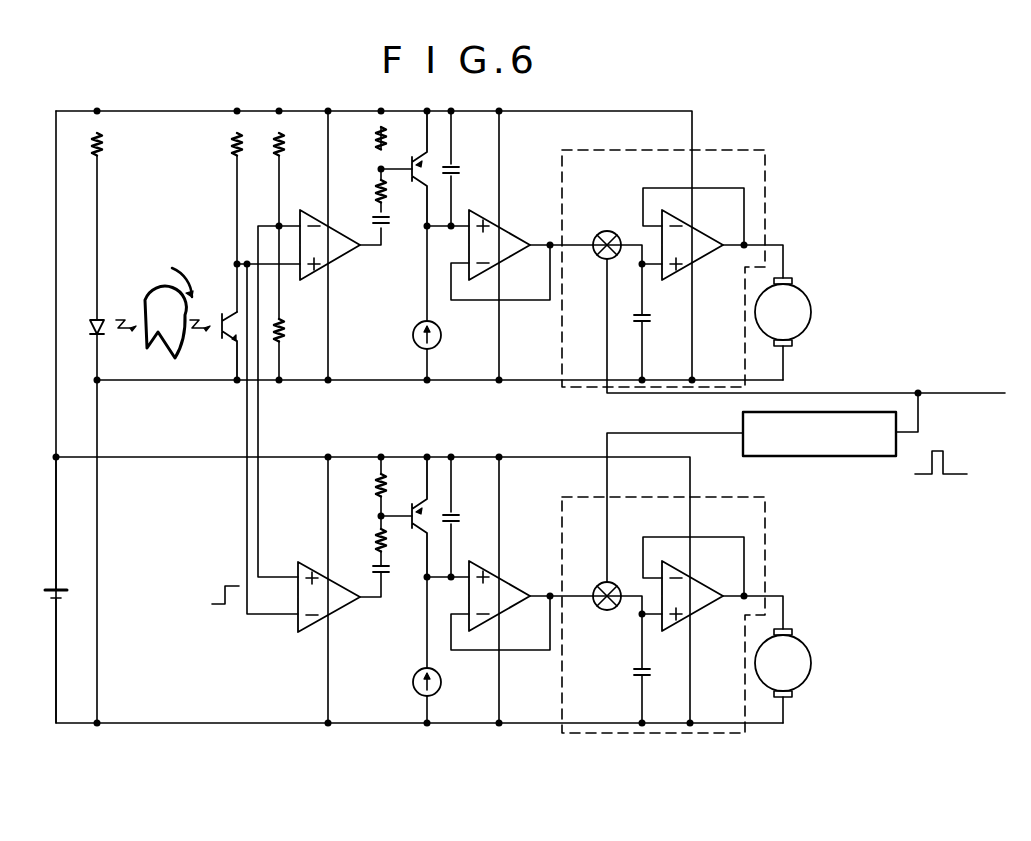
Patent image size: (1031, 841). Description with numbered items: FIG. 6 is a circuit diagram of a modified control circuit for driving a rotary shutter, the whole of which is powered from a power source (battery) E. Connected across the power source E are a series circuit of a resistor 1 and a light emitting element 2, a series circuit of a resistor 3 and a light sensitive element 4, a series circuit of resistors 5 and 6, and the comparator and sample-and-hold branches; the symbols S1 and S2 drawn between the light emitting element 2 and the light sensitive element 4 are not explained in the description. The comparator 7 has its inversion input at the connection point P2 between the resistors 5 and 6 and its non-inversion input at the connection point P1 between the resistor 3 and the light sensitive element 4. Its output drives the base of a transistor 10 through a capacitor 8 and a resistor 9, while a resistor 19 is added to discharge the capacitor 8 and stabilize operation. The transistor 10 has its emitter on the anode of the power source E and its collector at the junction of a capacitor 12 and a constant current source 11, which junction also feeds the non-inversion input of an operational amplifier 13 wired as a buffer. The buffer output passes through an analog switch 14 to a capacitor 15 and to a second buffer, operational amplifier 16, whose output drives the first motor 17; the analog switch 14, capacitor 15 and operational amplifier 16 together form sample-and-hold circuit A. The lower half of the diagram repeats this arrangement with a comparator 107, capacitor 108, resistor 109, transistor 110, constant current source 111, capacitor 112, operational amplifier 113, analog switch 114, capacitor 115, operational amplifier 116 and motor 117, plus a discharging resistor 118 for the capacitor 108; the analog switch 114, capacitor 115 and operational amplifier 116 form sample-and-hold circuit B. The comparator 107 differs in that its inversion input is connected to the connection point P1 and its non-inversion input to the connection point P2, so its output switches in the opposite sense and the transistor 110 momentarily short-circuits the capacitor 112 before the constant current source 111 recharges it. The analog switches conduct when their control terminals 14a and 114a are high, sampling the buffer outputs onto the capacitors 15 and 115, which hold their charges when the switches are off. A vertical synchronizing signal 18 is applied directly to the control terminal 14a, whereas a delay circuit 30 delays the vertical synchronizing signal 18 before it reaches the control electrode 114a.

The resistor 1 is at (105, 143).
The light emitting element 2 is at (90, 326).
The resistor 3 is at (230, 143).
The light sensitive element 4 is at (221, 318).
The resistor 5 is at (285, 144).
The resistor 6 is at (285, 329).
The comparator 7 is at (340, 262).
The capacitor 8 is at (372, 217).
The resistor 9 is at (372, 191).
The transistor 10 is at (416, 181).
The constant current source 11 is at (413, 335).
The capacitor 12 is at (462, 168).
The operational amplifier 13 is at (508, 232).
The analog switch 14 is at (607, 231).
The control terminal 14a is at (594, 264).
The capacitor 15 is at (650, 318).
The operational amplifier 16 is at (706, 258).
The first motor 17 is at (811, 305).
The vertical synchronizing signal 18 is at (942, 480).
The resistor 19 is at (375, 138).
The delay circuit 30 is at (863, 457).
The comparator 107 is at (340, 612).
The capacitor 108 is at (373, 568).
The resistor 109 is at (375, 540).
The transistor 110 is at (410, 527).
The constant current circuit 111 is at (413, 682).
The capacitor 112 is at (462, 515).
The operational amplifier 113 is at (508, 581).
The analog switch 114 is at (607, 610).
The control electrode 114a is at (588, 578).
The capacitor 115 is at (632, 672).
The operational amplifier 116 is at (705, 607).
The motor 117 is at (811, 655).
The resistor 118 is at (375, 485).
The sample-and-hold circuit A is at (712, 150).
The sample-and-hold circuit B is at (765, 550).
The power source E is at (66, 596).
The connection point P1 is at (247, 245).
The connection point P2 is at (265, 208).
The shutter disc S1 is at (163, 313).
The light source S2 is at (142, 322).